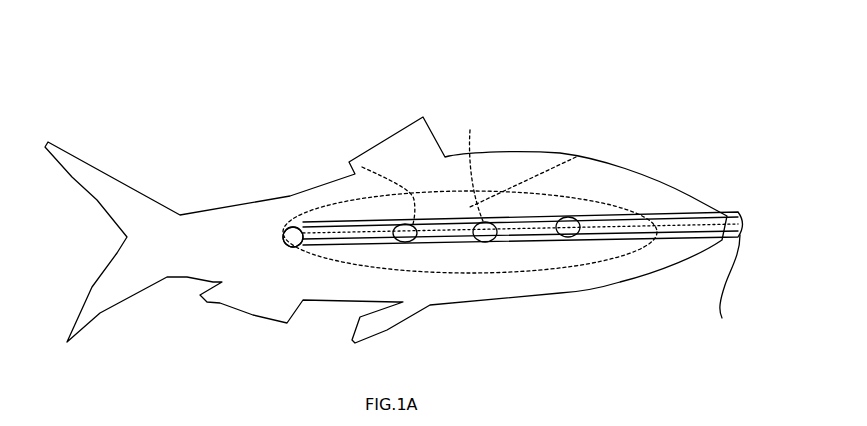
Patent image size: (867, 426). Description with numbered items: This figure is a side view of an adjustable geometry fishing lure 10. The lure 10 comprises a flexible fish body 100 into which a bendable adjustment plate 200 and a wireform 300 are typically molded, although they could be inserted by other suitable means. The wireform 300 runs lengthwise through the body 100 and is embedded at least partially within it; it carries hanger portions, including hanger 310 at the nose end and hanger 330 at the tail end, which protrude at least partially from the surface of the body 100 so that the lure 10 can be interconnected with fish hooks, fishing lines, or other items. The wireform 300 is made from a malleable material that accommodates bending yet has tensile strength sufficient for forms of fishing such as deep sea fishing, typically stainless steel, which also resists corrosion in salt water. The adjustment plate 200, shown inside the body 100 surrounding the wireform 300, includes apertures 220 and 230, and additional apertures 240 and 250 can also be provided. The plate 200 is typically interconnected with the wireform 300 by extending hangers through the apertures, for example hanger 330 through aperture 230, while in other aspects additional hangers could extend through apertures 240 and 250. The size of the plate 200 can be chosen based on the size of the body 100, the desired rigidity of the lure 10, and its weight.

The adjustable geometry fishing lure 10 is at (488, 76).
The flexible fish body 100 is at (569, 299).
The adjustment plate 200 is at (576, 157).
The aperture 220 is at (570, 217).
The aperture 230 is at (284, 229).
The aperture 240 is at (470, 130).
The aperture 250 is at (349, 162).
The wireform 300 is at (593, 214).
The hanger portion 310 is at (740, 277).
The hanger portion 330 is at (288, 247).